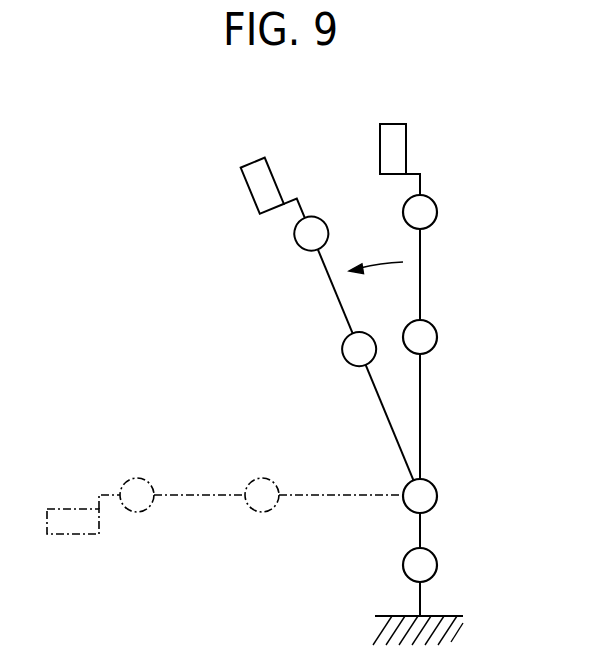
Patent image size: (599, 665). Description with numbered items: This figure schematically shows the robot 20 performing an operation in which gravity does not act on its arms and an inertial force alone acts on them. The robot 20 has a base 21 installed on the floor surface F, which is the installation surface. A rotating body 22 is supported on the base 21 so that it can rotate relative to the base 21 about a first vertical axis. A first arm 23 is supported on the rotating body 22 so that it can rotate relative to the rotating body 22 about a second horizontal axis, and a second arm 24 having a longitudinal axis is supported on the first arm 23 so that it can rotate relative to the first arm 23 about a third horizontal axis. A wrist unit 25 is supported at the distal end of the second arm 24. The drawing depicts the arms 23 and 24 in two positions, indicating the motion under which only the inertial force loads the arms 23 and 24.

The robot 20 is at (90, 270).
The base 21 is at (420, 598).
The rotating body 22 is at (420, 527).
The first arm 23 is at (420, 407).
The second arm 24 is at (420, 268).
The wrist unit 25 is at (418, 142).
The floor surface F is at (388, 616).